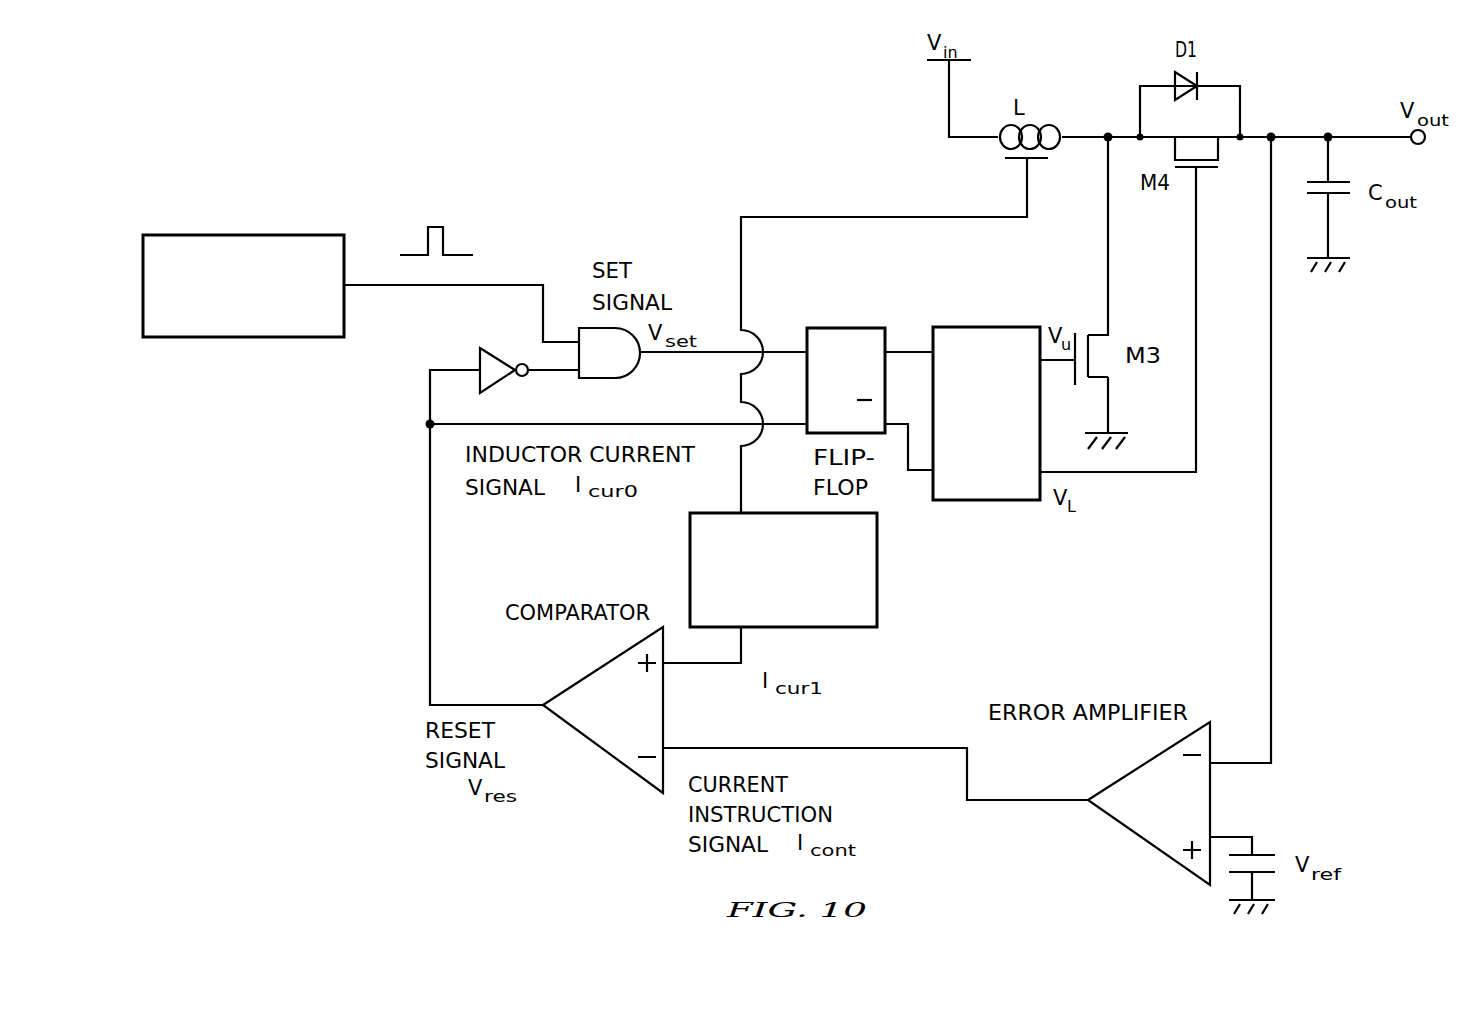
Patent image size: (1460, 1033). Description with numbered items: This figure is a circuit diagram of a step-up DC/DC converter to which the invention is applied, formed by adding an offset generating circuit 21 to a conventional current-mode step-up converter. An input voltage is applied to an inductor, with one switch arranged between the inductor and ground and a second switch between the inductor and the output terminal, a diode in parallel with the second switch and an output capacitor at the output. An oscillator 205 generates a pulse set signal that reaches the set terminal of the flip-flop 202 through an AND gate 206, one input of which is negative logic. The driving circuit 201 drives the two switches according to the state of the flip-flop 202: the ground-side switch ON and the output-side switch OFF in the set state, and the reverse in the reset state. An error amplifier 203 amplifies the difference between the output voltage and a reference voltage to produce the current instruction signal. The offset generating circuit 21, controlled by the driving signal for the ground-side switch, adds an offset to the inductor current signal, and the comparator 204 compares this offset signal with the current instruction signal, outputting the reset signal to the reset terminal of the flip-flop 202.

The oscillator 205 is at (340, 262).
The AND gate 206 is at (621, 367).
The flip-flop 202 is at (817, 328).
The driving circuit 201 is at (1035, 354).
The offset generating circuit 21 is at (877, 540).
The comparator 204 is at (630, 722).
The error amplifier 203 is at (1198, 809).